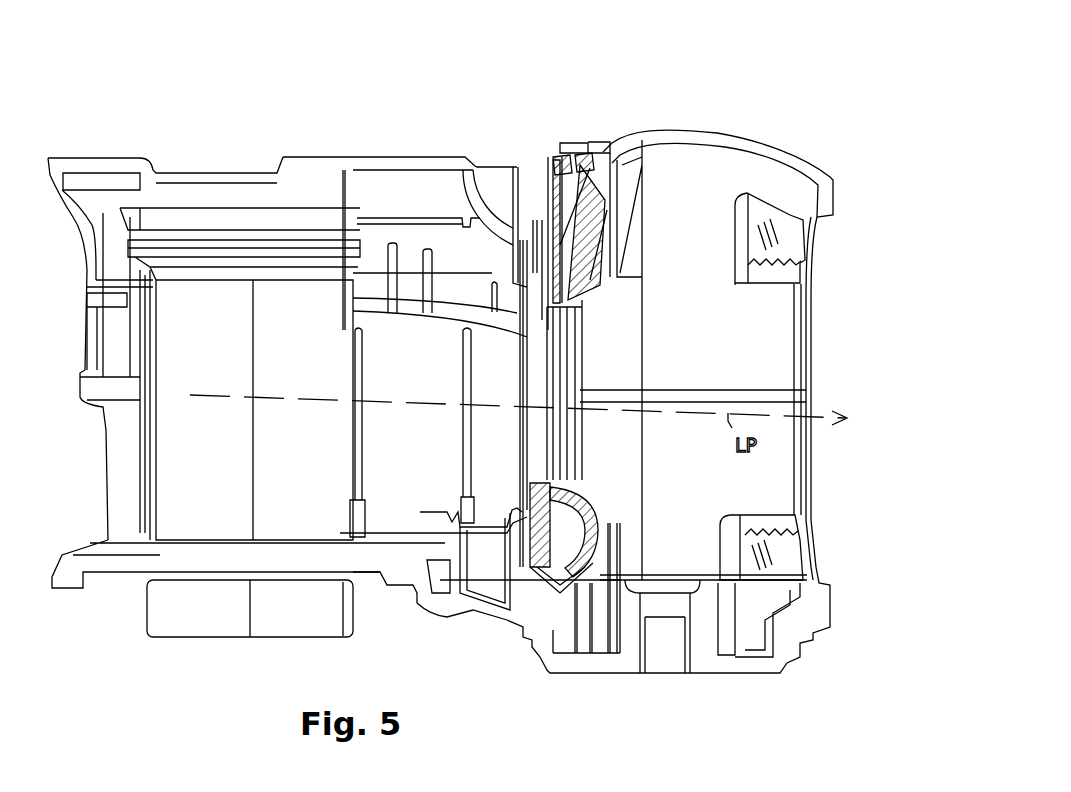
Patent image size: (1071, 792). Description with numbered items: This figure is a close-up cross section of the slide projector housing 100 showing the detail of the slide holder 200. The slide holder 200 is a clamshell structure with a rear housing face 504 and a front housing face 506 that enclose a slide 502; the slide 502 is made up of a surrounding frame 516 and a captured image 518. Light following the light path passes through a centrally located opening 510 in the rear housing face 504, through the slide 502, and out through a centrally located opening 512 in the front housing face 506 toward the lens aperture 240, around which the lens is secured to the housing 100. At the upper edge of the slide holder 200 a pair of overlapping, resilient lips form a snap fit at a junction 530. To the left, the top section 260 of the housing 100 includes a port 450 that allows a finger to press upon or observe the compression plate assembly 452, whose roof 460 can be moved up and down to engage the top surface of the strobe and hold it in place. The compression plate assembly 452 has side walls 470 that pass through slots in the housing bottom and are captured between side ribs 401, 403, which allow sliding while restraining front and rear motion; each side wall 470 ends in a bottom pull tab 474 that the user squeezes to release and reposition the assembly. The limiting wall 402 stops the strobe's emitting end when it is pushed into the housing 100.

The housing 100 is at (397, 145).
The slide holder 200 is at (560, 127).
The lens aperture 240 is at (763, 342).
The top section 260 is at (322, 153).
The side rib 401 is at (137, 480).
The limiting wall 402 is at (365, 446).
The side rib 403 is at (352, 425).
The port 450 is at (197, 158).
The compression plate assembly 452 is at (227, 243).
The roof 460 is at (196, 278).
The side wall 470 is at (170, 445).
The bottom pull tab 474 is at (195, 627).
The slide 502 is at (547, 468).
The rear housing face 504 is at (524, 433).
The front housing face 506 is at (547, 500).
The centrally located opening 510 is at (532, 413).
The centrally located opening 512 is at (572, 343).
The frame 516 is at (565, 300).
The captured image 518 is at (563, 430).
The junction 530 is at (552, 145).